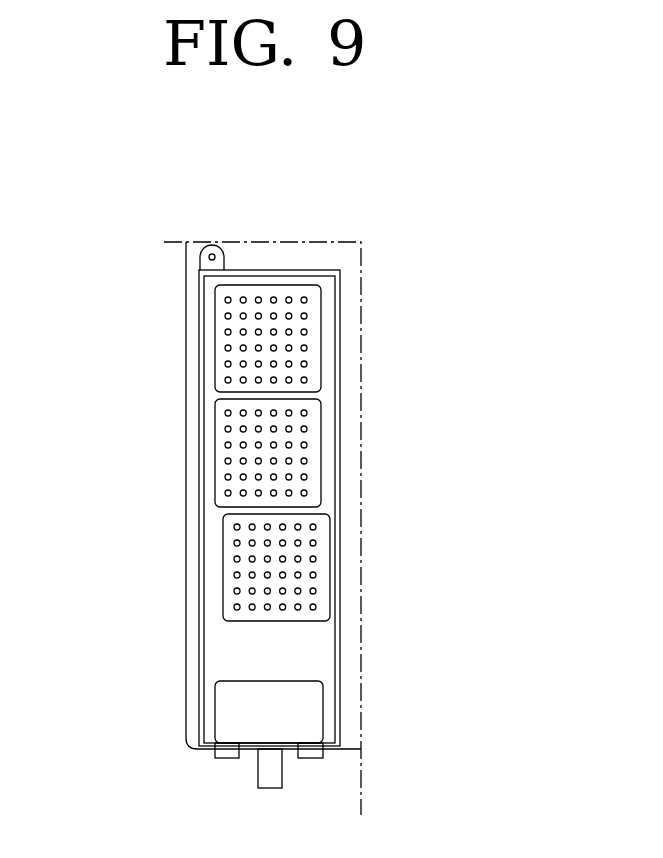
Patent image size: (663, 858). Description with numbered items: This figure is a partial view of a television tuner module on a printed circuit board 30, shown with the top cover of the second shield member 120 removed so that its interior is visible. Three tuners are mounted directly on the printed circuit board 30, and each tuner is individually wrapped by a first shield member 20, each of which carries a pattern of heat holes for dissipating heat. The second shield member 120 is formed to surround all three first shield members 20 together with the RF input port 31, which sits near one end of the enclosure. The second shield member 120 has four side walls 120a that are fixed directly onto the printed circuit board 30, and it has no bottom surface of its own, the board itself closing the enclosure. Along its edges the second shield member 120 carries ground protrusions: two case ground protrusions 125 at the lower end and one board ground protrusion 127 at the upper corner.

The printed circuit board 30 is at (305, 255).
The second shield member 120 is at (188, 533).
The side walls 120a is at (200, 480).
The board ground protrusion 127 is at (212, 245).
The first shield member 20 is at (239, 514).
The RF input port 31 is at (228, 701).
The case ground protrusions 125 is at (310, 758).